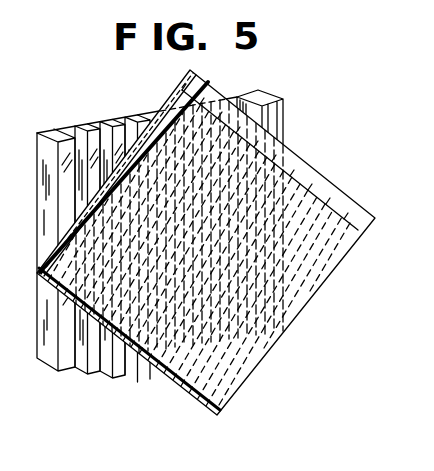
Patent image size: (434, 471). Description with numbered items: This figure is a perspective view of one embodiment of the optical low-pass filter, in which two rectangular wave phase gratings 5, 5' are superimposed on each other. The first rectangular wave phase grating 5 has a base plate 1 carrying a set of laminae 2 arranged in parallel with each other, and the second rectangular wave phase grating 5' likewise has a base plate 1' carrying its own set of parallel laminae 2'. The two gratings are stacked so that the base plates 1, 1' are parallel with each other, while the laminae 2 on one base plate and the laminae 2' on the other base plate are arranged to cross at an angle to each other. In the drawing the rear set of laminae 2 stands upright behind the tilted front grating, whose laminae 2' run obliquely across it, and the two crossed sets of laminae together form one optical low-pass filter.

The base plate 1 is at (56, 233).
The laminae 2 is at (87, 232).
The rectangular wave phase grating 5 is at (160, 217).
The base plate 1' is at (157, 267).
The laminae 2' is at (124, 259).
The rectangular wave phase grating 5' is at (232, 294).